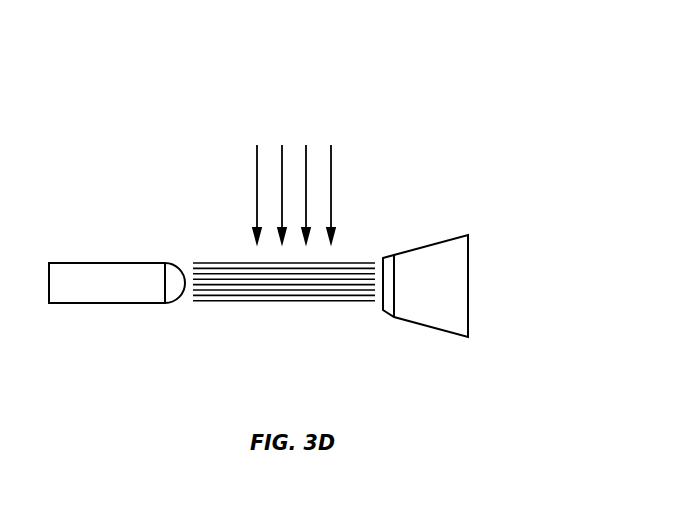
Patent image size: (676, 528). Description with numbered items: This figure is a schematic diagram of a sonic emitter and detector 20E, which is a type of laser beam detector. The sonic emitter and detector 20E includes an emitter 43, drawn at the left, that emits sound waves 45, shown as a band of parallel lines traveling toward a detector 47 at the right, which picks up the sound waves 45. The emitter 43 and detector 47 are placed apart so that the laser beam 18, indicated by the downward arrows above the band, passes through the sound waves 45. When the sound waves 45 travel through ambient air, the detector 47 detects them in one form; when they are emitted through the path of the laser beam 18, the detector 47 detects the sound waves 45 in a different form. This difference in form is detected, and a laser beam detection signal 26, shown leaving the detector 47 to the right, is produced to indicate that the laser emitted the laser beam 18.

The laser beam 18 is at (305, 128).
The sonic emitter and detector 20E is at (393, 186).
The laser beam detection signal 26 is at (468, 285).
The emitter 43 is at (82, 292).
The sound waves 45 is at (270, 302).
The detector 47 is at (410, 312).